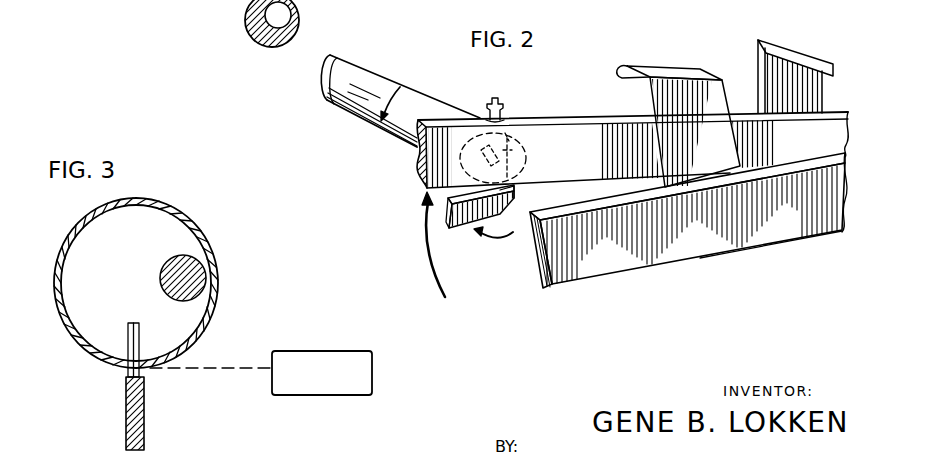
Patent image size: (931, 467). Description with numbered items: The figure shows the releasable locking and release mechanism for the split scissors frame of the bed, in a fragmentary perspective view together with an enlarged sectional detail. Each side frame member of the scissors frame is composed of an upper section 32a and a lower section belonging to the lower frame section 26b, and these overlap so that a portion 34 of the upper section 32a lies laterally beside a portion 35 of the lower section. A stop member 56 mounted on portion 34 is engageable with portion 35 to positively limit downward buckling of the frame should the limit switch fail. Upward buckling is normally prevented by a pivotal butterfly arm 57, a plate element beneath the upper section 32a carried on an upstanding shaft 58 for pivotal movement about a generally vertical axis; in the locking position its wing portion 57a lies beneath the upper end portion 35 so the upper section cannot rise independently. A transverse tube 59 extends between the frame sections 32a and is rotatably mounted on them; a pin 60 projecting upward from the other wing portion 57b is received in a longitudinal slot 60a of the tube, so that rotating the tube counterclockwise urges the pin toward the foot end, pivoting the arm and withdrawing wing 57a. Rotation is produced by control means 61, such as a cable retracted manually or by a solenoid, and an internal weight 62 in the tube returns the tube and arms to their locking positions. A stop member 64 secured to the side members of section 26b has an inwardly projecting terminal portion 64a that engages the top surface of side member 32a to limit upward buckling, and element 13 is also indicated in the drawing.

In FIG. 2, the ring end of tube 13 is at (247, 28).
In FIG. 2, the lower section of scissors frame 26b is at (808, 245).
In FIG. 2, the upper section of side frame member 32a is at (567, 121).
In FIG. 2, the portion of frame member 32a 34 is at (753, 117).
In FIG. 2, the portion of frame member 32b 35 is at (715, 242).
In FIG. 2, the stop member 56 is at (803, 63).
In FIG. 2, the butterfly arm 57 is at (468, 228).
In FIG. 2, the wing portion of butterfly arm 57a is at (488, 208).
In FIG. 3, the wing portion of butterfly arm 57b is at (125, 418).
In FIG. 2, the wing portion of butterfly arm 57b is at (515, 194).
In FIG. 2, the upstanding shaft 58 is at (490, 111).
In FIG. 3, the transverse tube 59 is at (198, 224).
In FIG. 2, the transverse tube 59 is at (363, 125).
In FIG. 3, the pin 60 is at (100, 363).
In FIG. 2, the pin 60 is at (520, 156).
In FIG. 3, the longitudinal slot 60a is at (140, 338).
In FIG. 2, the longitudinal slot 60a is at (520, 137).
In FIG. 3, the control means 61 is at (314, 351).
In FIG. 3, the internal weight 62 is at (162, 271).
In FIG. 2, the stop member 64 is at (672, 68).
In FIG. 2, the inwardly projecting terminal portion 64a is at (621, 66).